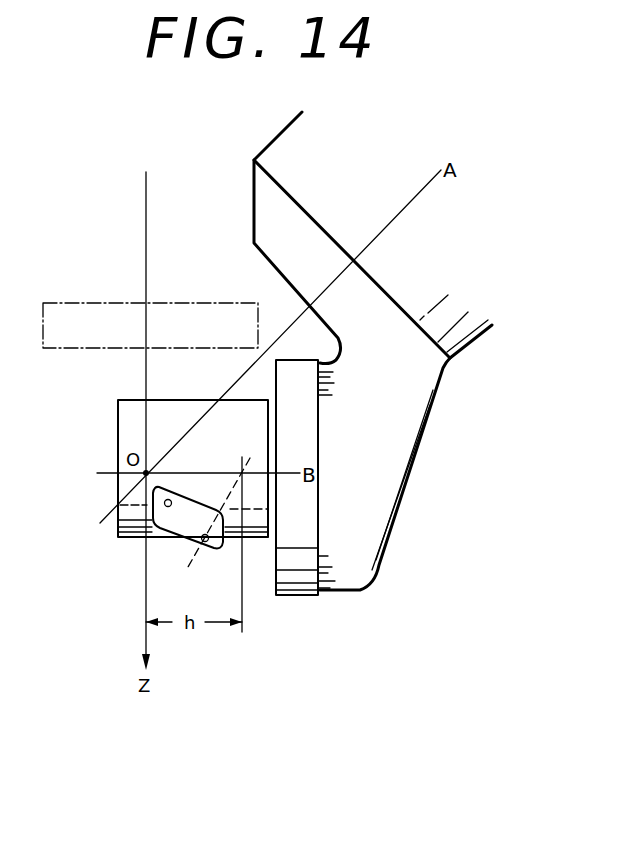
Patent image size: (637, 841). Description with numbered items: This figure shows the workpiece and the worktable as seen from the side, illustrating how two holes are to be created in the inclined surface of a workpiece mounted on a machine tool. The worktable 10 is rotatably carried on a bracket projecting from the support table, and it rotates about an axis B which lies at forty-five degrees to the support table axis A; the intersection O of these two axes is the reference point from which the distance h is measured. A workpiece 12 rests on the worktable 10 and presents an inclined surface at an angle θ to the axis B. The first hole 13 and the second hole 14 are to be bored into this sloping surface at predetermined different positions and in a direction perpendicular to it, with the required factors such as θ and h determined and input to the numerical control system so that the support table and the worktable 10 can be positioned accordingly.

The worktable 10 is at (290, 596).
The workpiece 12 is at (123, 423).
The first hole 13 is at (207, 542).
The second hole 14 is at (171, 500).